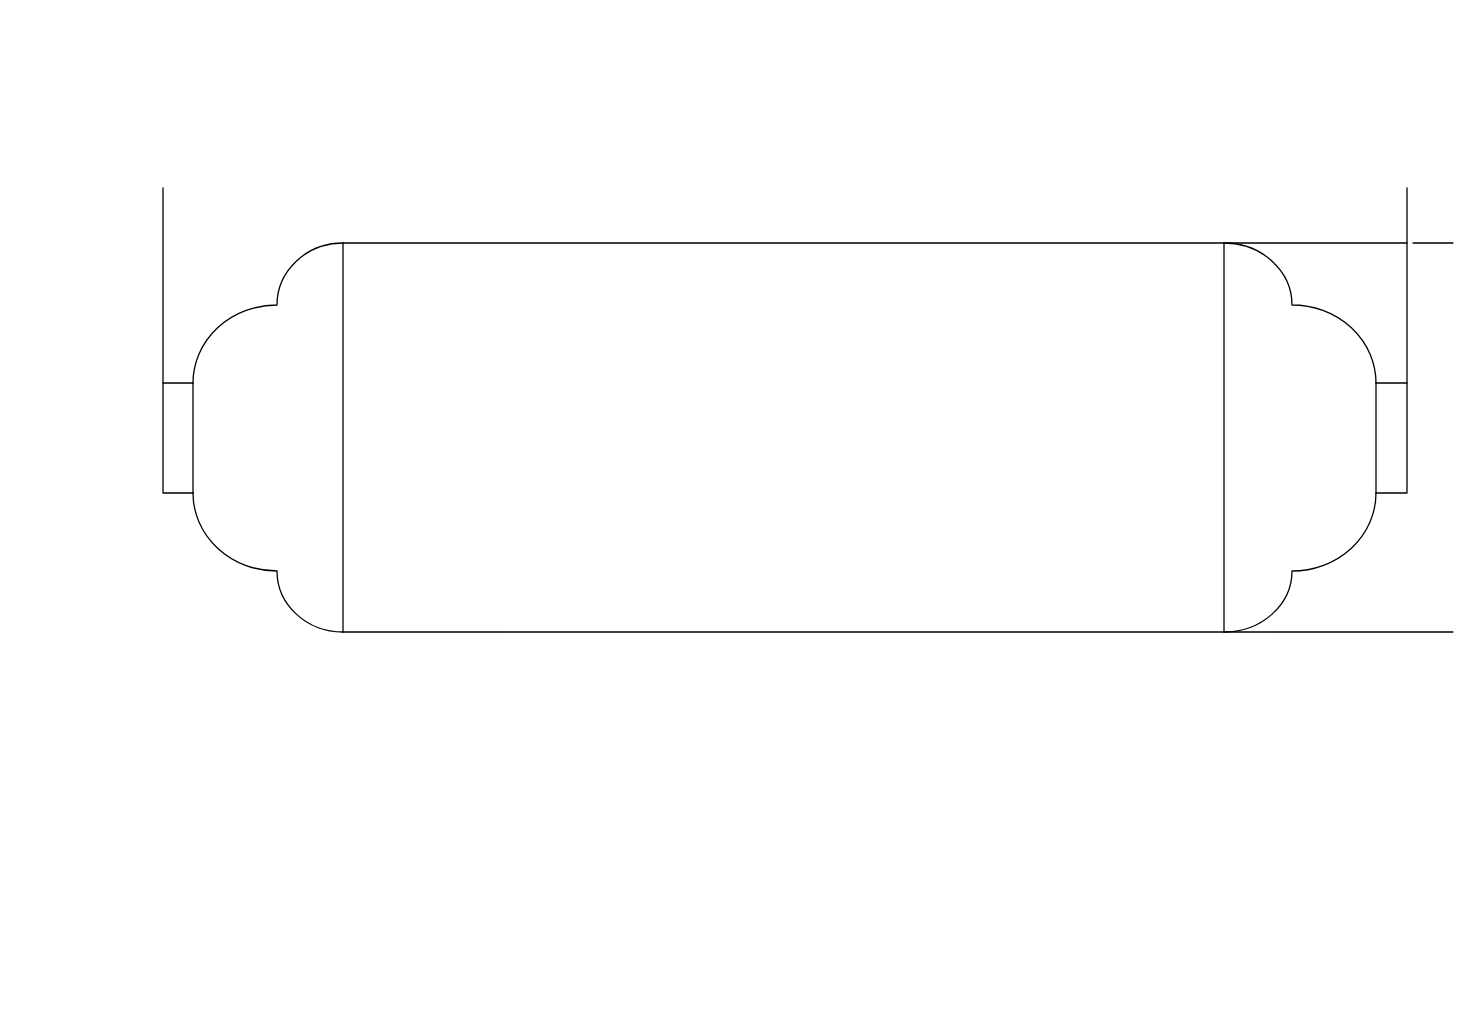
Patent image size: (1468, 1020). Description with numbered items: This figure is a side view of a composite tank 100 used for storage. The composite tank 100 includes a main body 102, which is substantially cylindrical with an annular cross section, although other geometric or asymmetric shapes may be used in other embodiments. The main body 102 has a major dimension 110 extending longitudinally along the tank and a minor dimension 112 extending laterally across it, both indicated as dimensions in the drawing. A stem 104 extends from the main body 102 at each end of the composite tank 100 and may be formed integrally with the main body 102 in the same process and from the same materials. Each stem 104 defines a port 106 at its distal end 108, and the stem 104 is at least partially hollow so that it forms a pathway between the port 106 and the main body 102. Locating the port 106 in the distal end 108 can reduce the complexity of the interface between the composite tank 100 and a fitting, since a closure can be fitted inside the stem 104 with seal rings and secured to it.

The composite tank 100 is at (1396, 120).
The main body 102 is at (943, 608).
The stem 104 is at (217, 496).
The port 106 is at (163, 438).
The distal end 108 is at (163, 383).
The major dimension 110 is at (1407, 202).
The minor dimension 112 is at (1438, 243).